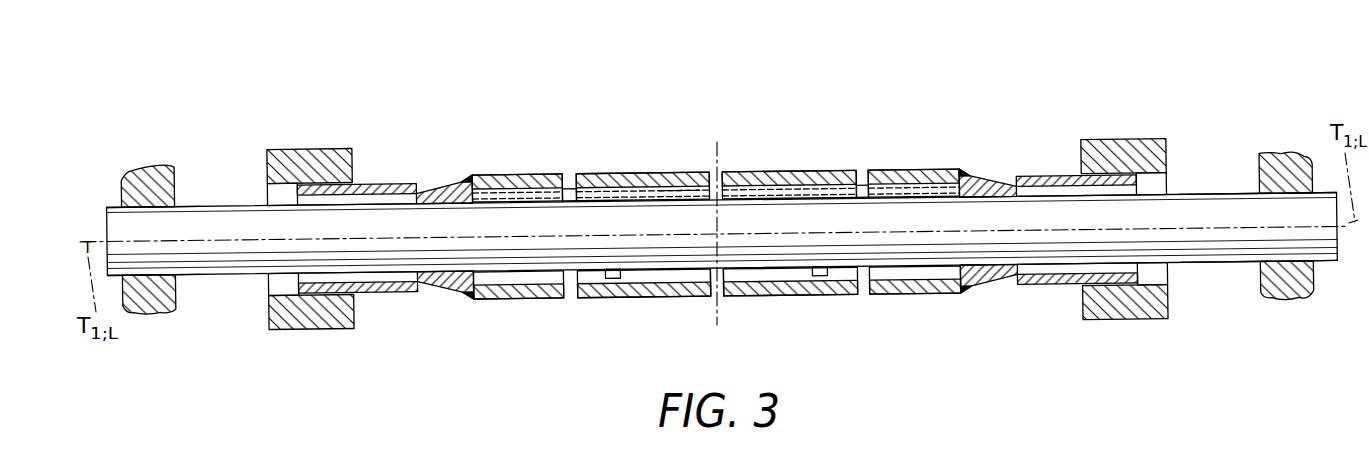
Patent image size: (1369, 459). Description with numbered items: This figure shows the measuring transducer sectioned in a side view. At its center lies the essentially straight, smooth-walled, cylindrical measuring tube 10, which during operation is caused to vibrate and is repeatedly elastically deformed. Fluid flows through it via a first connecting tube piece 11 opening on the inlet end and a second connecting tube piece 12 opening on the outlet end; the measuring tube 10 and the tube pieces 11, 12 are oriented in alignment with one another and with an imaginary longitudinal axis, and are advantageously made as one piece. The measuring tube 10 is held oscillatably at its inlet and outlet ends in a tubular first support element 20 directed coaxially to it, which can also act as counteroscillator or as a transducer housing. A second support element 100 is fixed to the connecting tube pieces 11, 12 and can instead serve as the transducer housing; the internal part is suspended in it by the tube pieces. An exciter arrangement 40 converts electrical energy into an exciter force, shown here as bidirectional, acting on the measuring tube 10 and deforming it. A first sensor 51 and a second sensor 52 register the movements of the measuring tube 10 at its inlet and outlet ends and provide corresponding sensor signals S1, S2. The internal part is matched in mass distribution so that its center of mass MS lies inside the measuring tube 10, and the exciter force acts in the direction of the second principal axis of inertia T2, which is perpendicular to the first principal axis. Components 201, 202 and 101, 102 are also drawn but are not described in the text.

The measuring tube 10 is at (493, 218).
The first connecting tube piece 11 is at (218, 253).
The second connecting tube piece 12 is at (1212, 237).
The second support element 100 is at (145, 164).
The first stator part 201 is at (590, 129).
The second stator part 202 is at (840, 126).
The first support element 20 is at (840, 126).
The first sensor 51 is at (592, 320).
The second sensor 52 is at (842, 315).
The first sensor 101 is at (613, 298).
The second sensor 102 is at (820, 297).
The exciter arrangement 40 is at (724, 306).
The sensor signal S1 is at (573, 189).
The sensor signal S2 is at (856, 126).
The center of mass MS is at (680, 162).
The second principal axis of inertia T2 is at (718, 219).